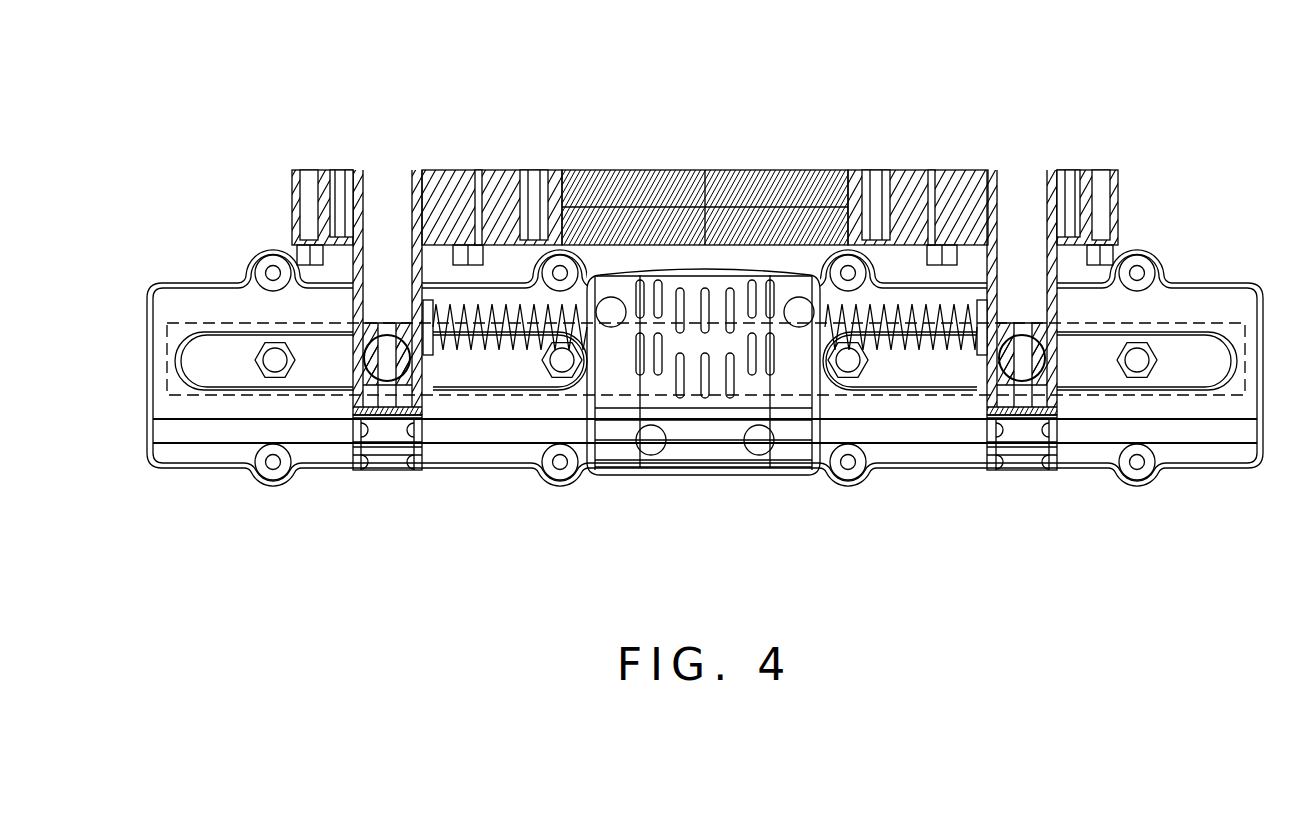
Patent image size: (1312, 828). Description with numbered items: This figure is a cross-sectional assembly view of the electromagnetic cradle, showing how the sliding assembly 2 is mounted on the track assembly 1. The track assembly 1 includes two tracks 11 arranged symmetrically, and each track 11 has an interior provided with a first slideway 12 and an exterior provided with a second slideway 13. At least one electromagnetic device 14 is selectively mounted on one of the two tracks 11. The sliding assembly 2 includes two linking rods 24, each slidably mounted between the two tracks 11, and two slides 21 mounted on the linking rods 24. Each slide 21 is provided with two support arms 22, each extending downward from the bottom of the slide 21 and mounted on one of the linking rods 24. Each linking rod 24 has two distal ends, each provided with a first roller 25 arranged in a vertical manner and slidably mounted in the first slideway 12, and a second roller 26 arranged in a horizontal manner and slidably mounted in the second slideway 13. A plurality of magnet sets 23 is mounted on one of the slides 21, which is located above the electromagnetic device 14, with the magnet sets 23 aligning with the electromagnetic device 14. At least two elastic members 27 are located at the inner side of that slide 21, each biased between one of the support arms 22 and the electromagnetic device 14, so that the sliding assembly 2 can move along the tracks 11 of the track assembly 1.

The track assembly 1 is at (718, 345).
The sliding assembly 2 is at (760, 320).
The track 11 is at (1231, 296).
The first slideway 12 is at (172, 322).
The second slideway 13 is at (215, 432).
The electromagnetic device 14 is at (703, 458).
The slide 21 is at (965, 176).
The support arm 22 is at (418, 283).
The magnet set 23 is at (826, 172).
The linking rod 24 is at (375, 345).
The first roller 25 is at (353, 342).
The second roller 26 is at (385, 437).
The elastic member 27 is at (480, 347).